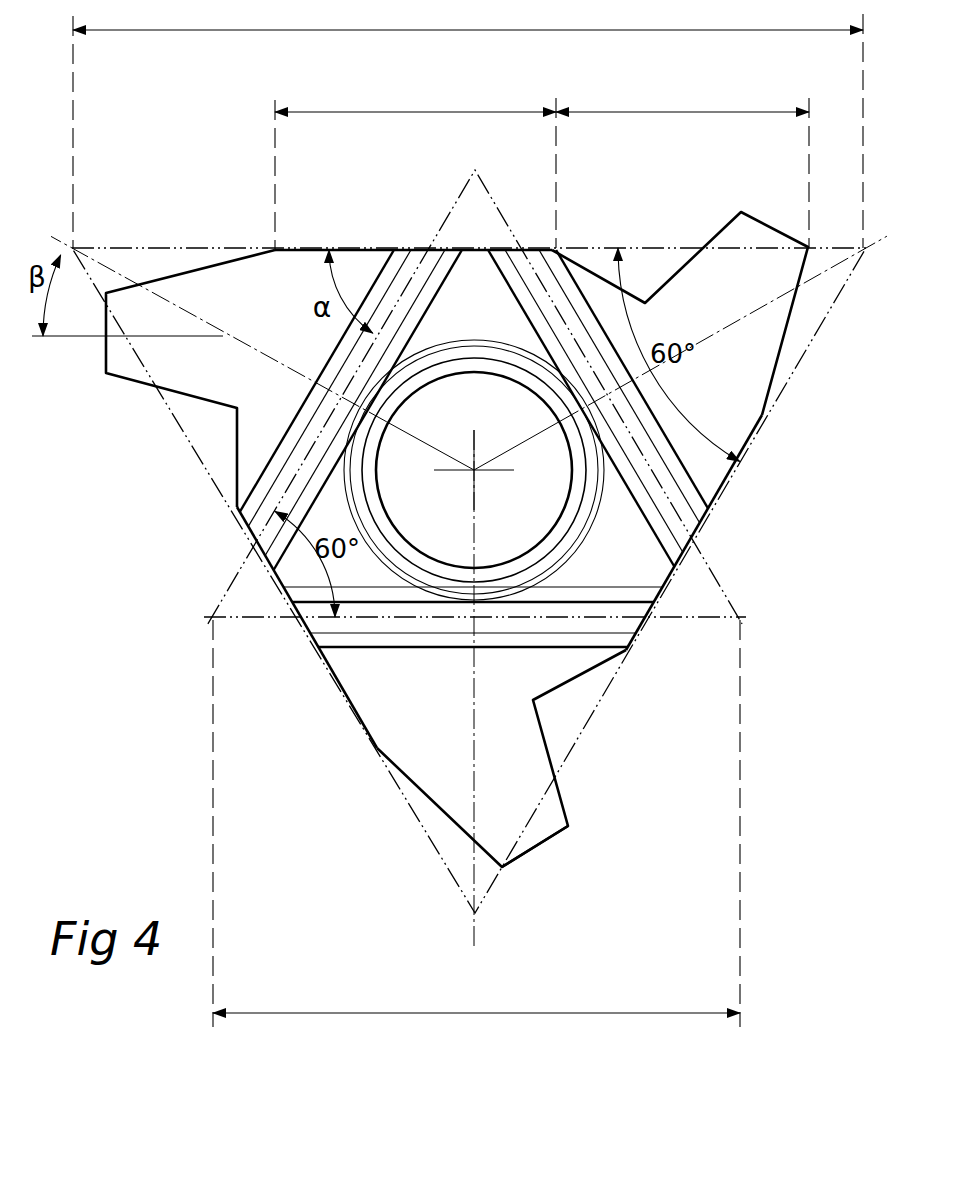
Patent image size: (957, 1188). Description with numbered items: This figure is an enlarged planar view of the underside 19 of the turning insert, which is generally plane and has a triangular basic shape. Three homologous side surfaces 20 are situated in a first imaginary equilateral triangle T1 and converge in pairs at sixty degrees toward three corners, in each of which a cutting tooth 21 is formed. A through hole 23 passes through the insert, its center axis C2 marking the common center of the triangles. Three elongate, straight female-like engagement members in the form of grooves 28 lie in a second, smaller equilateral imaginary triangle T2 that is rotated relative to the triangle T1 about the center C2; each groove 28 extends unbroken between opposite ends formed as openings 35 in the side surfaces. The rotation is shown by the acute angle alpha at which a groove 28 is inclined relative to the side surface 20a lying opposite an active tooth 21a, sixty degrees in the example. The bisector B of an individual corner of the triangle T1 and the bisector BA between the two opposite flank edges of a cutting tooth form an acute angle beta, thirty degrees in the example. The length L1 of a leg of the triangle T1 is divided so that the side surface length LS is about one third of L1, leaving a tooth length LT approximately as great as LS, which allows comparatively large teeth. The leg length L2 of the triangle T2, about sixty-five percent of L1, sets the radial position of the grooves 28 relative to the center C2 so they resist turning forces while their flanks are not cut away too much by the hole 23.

The underside 19 is at (448, 727).
The side surfaces 20 is at (647, 636).
The side surface 20a is at (307, 249).
The tooth 21 is at (723, 220).
The active tooth 21a is at (548, 847).
The through hole 23 is at (482, 413).
The engagement members (grooves) 28 is at (380, 272).
The openings 35 is at (427, 249).
The center axis C2 is at (473, 473).
The bisector B is at (250, 353).
The bisector BA is at (190, 337).
The first imaginary triangle T1 is at (823, 317).
The second imaginary triangle T2 is at (687, 619).
The leg length of first triangle L1 is at (468, 124).
The side surface length LS is at (415, 166).
The cutting tooth length LT is at (682, 165).
The leg length of second triangle L2 is at (476, 823).